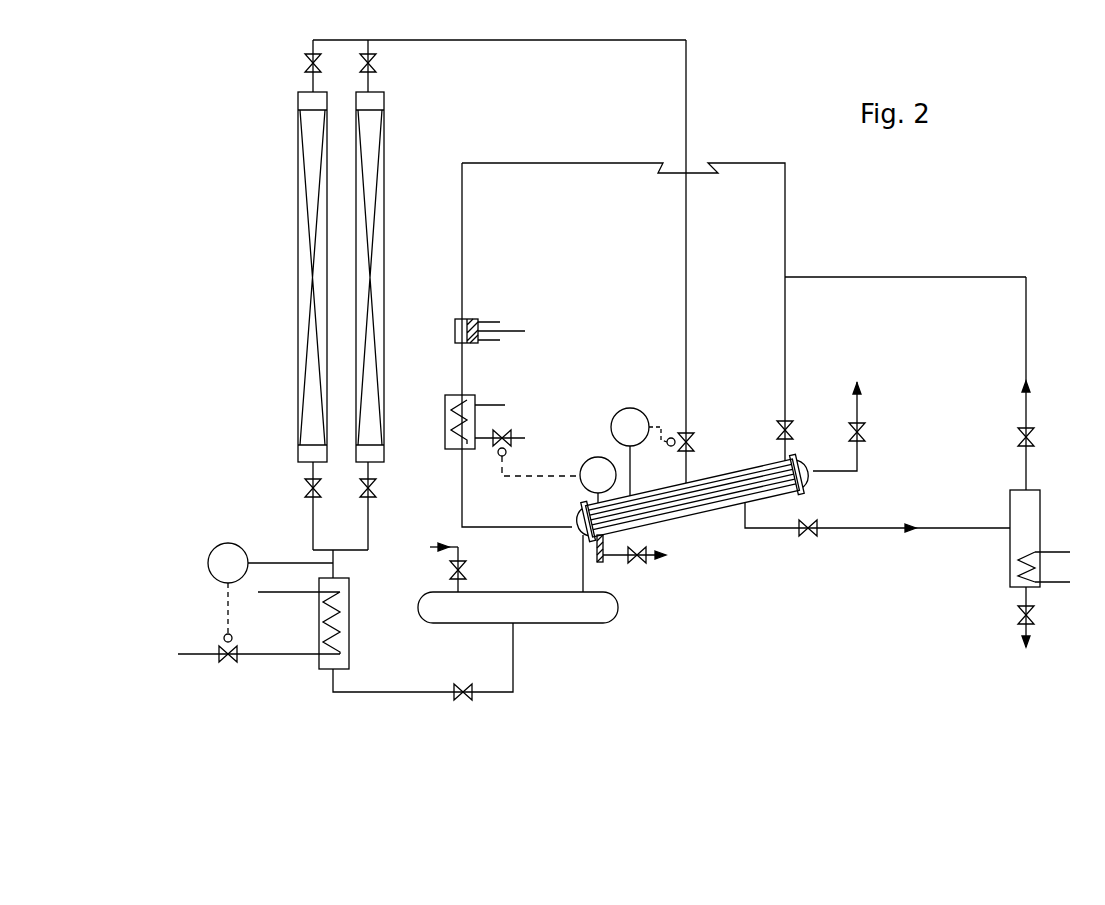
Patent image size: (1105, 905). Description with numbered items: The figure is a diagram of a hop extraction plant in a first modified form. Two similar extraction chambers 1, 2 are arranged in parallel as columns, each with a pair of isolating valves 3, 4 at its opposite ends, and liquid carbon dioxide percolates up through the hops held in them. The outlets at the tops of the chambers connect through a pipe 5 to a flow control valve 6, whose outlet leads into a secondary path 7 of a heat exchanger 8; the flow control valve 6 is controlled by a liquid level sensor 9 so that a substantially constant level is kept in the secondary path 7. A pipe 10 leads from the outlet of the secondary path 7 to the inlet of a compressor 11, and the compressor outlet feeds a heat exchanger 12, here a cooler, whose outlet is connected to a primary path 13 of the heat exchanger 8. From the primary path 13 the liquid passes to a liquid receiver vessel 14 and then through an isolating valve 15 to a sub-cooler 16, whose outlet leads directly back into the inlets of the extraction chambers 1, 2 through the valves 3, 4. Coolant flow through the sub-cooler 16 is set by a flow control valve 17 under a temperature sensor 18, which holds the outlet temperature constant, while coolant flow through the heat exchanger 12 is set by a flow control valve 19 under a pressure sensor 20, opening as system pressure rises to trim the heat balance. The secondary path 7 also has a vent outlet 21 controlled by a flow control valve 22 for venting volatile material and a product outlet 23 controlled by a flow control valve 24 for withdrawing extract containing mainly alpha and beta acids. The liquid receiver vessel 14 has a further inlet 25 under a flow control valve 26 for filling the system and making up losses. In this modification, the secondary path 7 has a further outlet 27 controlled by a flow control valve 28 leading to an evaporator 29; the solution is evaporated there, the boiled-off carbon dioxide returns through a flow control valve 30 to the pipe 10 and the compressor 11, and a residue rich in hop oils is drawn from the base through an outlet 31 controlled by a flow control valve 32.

The extraction chamber 1 is at (298, 263).
The extraction chamber 2 is at (372, 262).
The isolating valve 3 is at (304, 64).
The isolating valve 4 is at (377, 64).
The pipe 5 is at (686, 72).
The flow control valve 6 is at (695, 445).
The secondary path 7 is at (686, 468).
The heat exchanger 8 is at (706, 528).
The liquid level sensor 9 is at (632, 424).
The pipe 10 is at (785, 216).
The compressor 11 is at (473, 319).
The heat exchanger 12 is at (475, 397).
The primary path 13 is at (557, 535).
The liquid receiver vessel 14 is at (525, 612).
The isolating valve 15 is at (464, 686).
The sub-cooler 16 is at (345, 642).
The flow control valve 17 is at (228, 662).
The temperature sensor 18 is at (222, 560).
The flow control valve 19 is at (508, 434).
The pressure sensor 20 is at (596, 475).
The vent outlet 21 is at (860, 459).
The flow control valve 22 is at (866, 434).
The product outlet 23 is at (602, 562).
The flow control valve 24 is at (641, 565).
The inlet 25 is at (466, 590).
The flow control valve 26 is at (460, 564).
The outlet 27 is at (760, 528).
The flow control valve 28 is at (812, 522).
The evaporator 29 is at (1022, 512).
The flow control valve 30 is at (1037, 438).
The outlet 31 is at (1038, 590).
The flow control valve 32 is at (1018, 615).